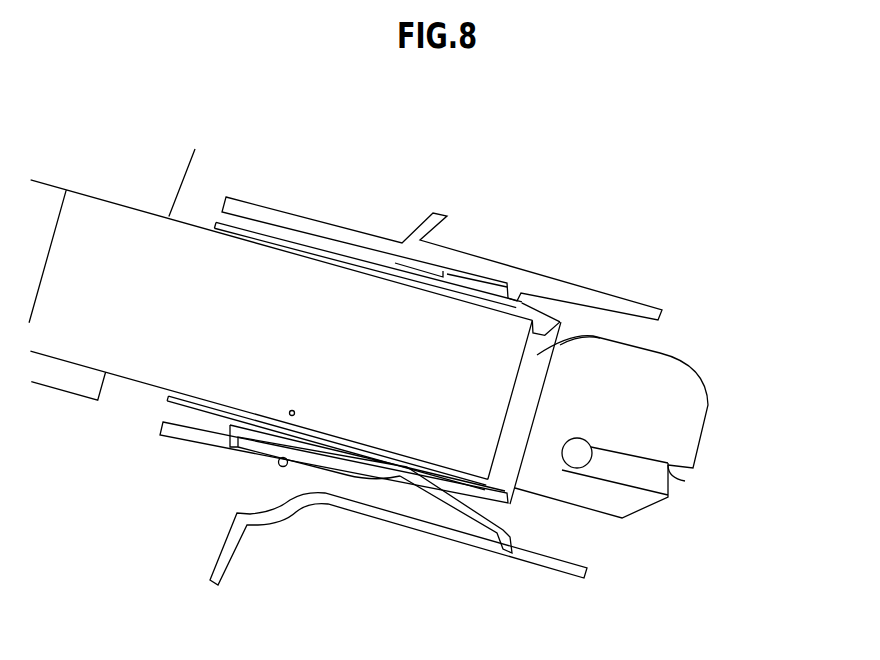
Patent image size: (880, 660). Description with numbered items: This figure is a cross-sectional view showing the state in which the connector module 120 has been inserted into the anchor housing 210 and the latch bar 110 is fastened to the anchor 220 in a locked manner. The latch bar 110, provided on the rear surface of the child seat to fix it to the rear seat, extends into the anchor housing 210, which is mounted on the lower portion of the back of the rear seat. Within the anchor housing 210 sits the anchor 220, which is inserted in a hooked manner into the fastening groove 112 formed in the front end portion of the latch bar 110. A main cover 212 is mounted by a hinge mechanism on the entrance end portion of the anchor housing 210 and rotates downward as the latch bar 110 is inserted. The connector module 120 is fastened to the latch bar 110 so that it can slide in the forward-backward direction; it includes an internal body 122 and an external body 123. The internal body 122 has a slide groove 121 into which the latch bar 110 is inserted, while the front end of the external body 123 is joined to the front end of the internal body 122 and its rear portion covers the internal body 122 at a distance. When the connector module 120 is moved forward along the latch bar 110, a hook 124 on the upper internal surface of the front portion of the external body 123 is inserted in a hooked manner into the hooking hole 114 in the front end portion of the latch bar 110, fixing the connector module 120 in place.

The latch bar 110 is at (714, 379).
The fastening groove 112 is at (685, 481).
The hooking hole 114 is at (540, 354).
The connector module 120 is at (274, 476).
The slide groove 121 is at (290, 247).
The internal body 122 is at (168, 399).
The external body 123 is at (215, 445).
The hook 124 is at (543, 323).
The anchor housing 210 is at (631, 292).
The main cover 212 is at (457, 502).
The anchor 220 is at (577, 457).